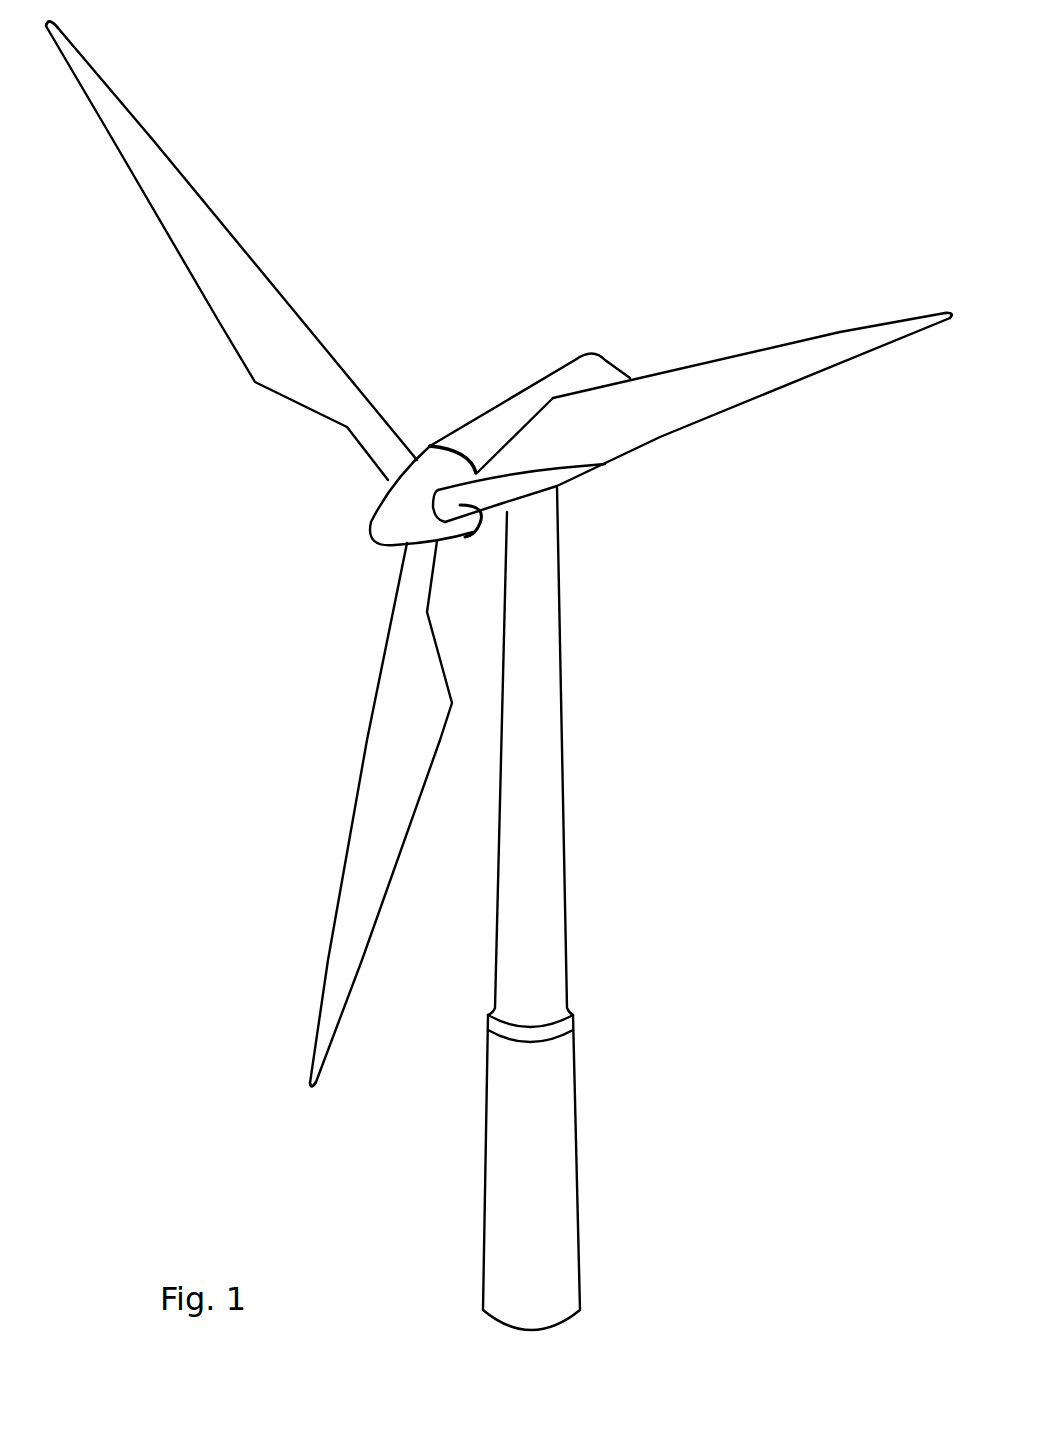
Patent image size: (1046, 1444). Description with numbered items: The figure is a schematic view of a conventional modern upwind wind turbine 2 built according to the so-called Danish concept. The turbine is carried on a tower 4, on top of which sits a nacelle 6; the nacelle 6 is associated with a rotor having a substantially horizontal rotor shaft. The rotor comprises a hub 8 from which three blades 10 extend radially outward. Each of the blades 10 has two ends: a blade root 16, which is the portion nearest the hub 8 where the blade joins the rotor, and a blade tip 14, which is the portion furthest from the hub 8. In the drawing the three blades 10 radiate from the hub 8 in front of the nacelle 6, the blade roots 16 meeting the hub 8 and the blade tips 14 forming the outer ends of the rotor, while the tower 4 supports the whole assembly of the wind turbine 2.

The wind turbine 2 is at (675, 838).
The tower 4 is at (550, 753).
The nacelle 6 is at (493, 423).
The hub 8 is at (390, 518).
The blades 10 is at (268, 350).
The blade tip 14 is at (96, 86).
The blade root 16 is at (398, 467).